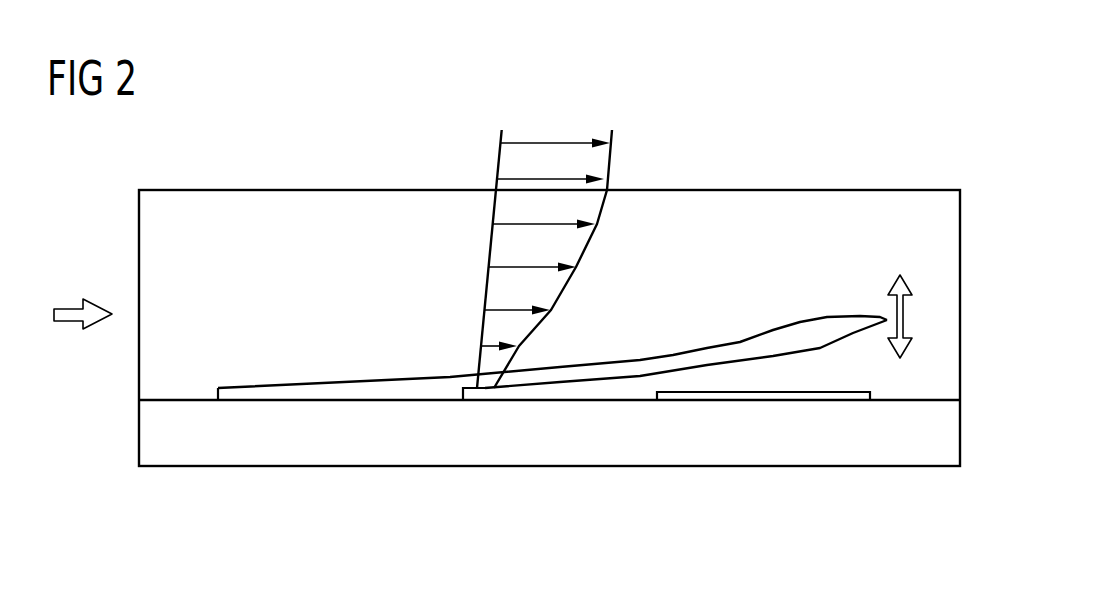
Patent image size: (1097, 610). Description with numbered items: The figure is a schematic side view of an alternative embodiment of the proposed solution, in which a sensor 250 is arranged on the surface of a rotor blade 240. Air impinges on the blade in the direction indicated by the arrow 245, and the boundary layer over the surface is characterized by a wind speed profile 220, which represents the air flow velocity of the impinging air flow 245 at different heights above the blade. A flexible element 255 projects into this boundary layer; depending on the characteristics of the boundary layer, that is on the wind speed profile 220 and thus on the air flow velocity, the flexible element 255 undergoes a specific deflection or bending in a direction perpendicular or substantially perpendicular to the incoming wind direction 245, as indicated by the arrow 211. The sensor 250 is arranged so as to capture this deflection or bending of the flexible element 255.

The wind speed profile 220 is at (563, 126).
The sensor 250 is at (842, 176).
The arrow indicating deflection or bending 211 is at (907, 315).
The flexible element 255 is at (722, 350).
The arrow indicating impinging air flow 245 is at (72, 322).
The rotor blade 240 is at (882, 455).